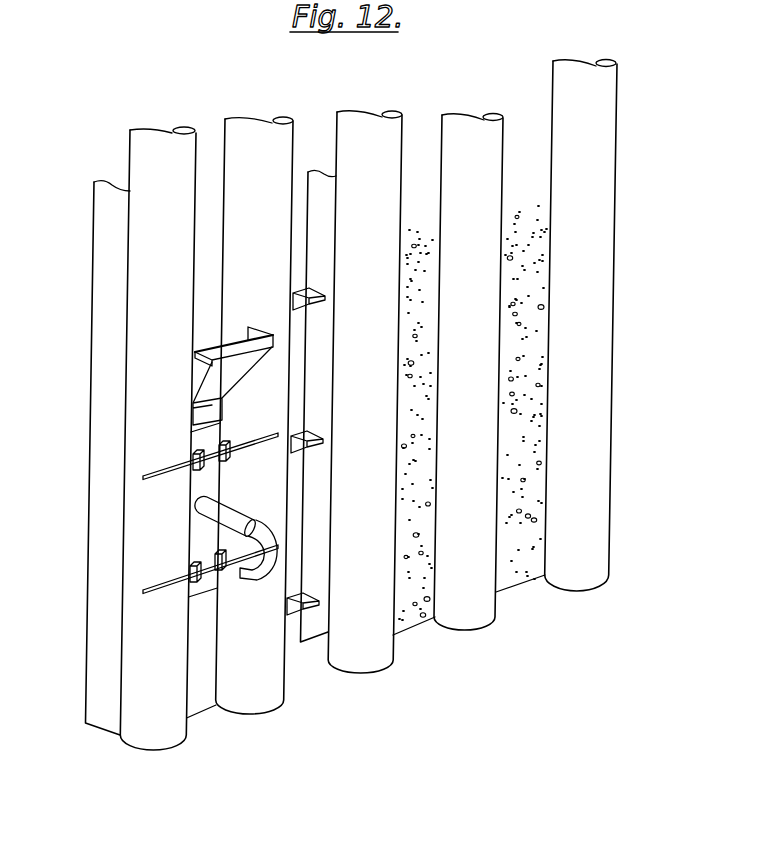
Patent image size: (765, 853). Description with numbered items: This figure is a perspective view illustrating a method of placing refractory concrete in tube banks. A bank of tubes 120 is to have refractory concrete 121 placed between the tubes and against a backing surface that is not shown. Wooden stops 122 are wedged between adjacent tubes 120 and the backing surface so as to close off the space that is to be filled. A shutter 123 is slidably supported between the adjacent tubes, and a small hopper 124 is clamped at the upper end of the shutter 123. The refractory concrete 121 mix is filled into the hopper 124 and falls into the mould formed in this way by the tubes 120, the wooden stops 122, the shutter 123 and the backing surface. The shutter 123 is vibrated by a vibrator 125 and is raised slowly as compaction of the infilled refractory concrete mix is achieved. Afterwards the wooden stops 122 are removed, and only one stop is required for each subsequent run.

The tubes 120 is at (560, 102).
The refractory concrete 121 is at (537, 277).
The wooden stops 122 is at (102, 543).
The shutter 123 is at (200, 488).
The small hopper 124 is at (200, 380).
The vibrator 125 is at (208, 512).